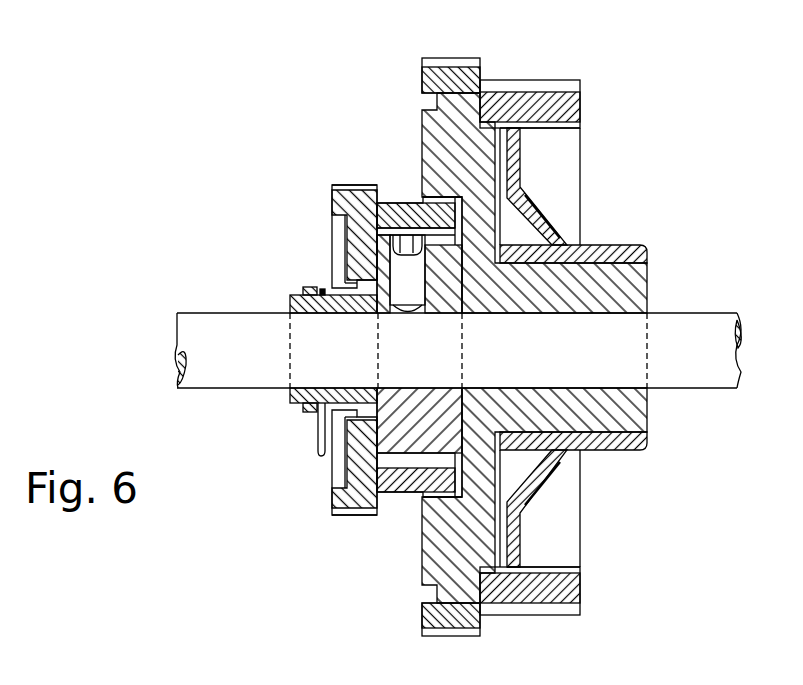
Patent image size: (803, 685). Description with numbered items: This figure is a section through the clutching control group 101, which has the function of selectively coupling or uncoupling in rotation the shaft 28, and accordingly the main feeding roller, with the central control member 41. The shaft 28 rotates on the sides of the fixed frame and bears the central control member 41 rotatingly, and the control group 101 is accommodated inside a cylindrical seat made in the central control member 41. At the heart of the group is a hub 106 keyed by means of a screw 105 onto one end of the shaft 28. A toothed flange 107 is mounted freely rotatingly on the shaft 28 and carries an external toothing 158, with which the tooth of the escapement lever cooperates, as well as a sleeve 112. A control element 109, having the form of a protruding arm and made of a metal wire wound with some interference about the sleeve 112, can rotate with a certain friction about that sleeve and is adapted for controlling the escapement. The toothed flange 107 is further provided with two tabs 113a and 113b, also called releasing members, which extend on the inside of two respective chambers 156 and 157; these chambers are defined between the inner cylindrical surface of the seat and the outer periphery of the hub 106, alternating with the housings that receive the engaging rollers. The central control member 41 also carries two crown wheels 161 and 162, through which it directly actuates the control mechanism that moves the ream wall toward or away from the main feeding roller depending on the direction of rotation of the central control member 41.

The clutching control group 101 is at (323, 575).
The shaft 28 is at (692, 322).
The central control member 41 is at (617, 244).
The screw 105 is at (410, 313).
The hub 106 is at (399, 392).
The toothed flange 107 is at (333, 197).
The control element 109 is at (320, 437).
The sleeve 112 is at (320, 291).
The tab 113a is at (436, 200).
The tab 113b is at (437, 498).
The chamber 156 is at (410, 197).
The chamber 157 is at (412, 502).
The external toothing 158 is at (350, 186).
The crown wheel 161 is at (533, 88).
The crown wheel 162 is at (448, 58).